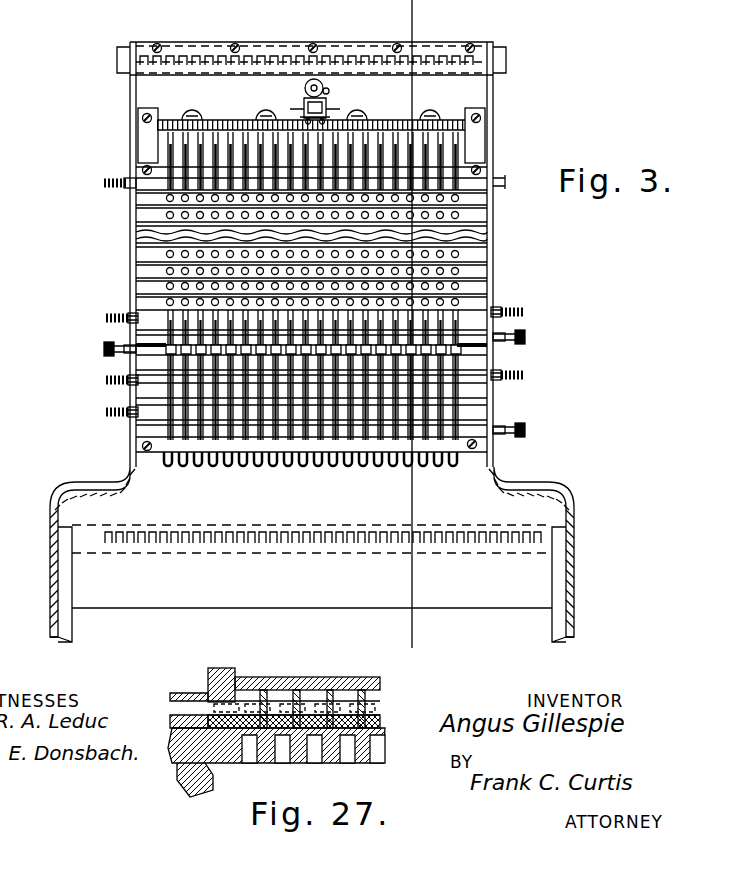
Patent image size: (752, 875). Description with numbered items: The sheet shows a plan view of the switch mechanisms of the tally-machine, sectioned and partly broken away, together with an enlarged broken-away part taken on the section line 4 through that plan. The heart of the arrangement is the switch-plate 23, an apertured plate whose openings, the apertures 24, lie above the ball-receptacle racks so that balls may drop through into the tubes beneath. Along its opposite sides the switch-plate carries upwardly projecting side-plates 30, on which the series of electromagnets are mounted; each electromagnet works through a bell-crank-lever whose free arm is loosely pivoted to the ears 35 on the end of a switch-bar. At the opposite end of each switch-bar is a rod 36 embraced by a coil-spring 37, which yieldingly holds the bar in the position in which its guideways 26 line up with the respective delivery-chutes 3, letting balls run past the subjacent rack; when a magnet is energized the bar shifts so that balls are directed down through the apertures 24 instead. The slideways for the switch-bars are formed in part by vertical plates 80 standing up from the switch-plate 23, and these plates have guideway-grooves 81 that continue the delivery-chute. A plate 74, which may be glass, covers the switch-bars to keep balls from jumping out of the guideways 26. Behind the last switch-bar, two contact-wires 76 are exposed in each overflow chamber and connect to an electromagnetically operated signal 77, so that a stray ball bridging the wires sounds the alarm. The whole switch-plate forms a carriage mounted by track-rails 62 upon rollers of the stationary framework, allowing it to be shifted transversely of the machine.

In FIG. 3, the delivery-chute 3 is at (291, 466).
In FIG. 27, the delivery-chute 3 is at (179, 693).
In FIG. 3, the section line 4— 4 is at (407, 333).
In FIG. 27, the switch-plate 23 is at (172, 732).
In FIG. 27, the apertures 24 is at (335, 760).
In FIG. 27, the guideways 26 is at (310, 698).
In FIG. 3, the side-plates 30 is at (136, 258).
In FIG. 3, the ears 35 is at (112, 334).
In FIG. 3, the rod 36 is at (112, 359).
In FIG. 3, the coil-spring 37 is at (112, 406).
In FIG. 27, the track-rails 62 is at (203, 797).
In FIG. 27, the plate 74 is at (340, 677).
In FIG. 3, the contact-wires 76 is at (218, 137).
In FIG. 3, the electromagnetically operated signal 77 is at (328, 103).
In FIG. 27, the vertical plates 80 is at (380, 716).
In FIG. 27, the guideway-grooves 81 is at (363, 708).